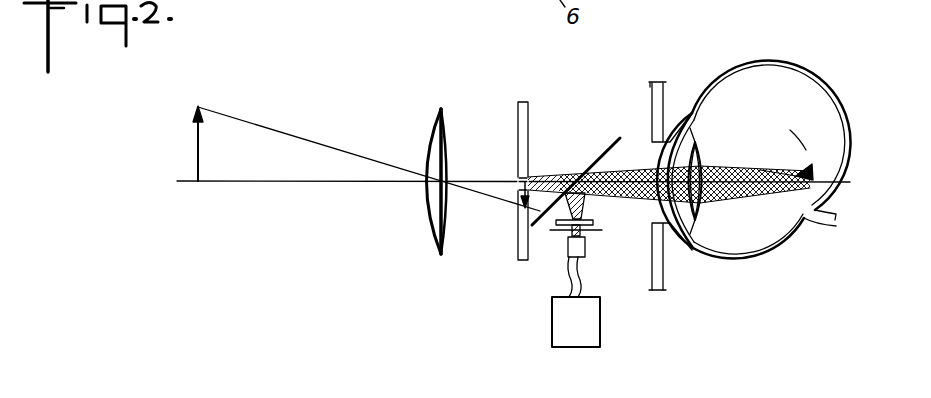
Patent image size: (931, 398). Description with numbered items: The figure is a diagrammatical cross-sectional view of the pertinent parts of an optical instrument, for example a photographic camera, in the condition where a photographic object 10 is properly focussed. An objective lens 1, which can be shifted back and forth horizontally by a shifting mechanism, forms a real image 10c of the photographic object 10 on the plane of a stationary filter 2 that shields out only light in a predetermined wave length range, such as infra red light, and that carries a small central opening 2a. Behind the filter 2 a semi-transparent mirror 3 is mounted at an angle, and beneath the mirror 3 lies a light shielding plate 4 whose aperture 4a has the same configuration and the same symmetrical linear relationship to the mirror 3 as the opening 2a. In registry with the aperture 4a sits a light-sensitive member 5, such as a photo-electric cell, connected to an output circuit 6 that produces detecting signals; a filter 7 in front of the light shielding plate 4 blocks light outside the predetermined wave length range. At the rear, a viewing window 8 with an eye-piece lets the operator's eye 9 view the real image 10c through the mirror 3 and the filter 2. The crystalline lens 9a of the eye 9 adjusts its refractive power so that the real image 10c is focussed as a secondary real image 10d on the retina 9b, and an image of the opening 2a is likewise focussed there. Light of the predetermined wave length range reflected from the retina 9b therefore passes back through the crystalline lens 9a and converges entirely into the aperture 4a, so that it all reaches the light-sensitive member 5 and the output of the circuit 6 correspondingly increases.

The objective lens 1 is at (428, 125).
The filter 2 is at (525, 100).
The opening 2a is at (518, 183).
The semi-transparent mirror 3 is at (617, 137).
The light shielding plate 4 is at (590, 236).
The aperture 4a is at (573, 240).
The light-sensitive member 5 is at (568, 261).
The output circuit 6 is at (573, 348).
The filter 7 is at (593, 221).
The viewing window 8 is at (655, 272).
The eye 9 is at (745, 112).
The crystalline lens 9a is at (703, 196).
The retina 9b is at (793, 138).
The photographic object 10 is at (195, 135).
The real image 10c is at (521, 196).
The secondary real image 10d is at (798, 168).